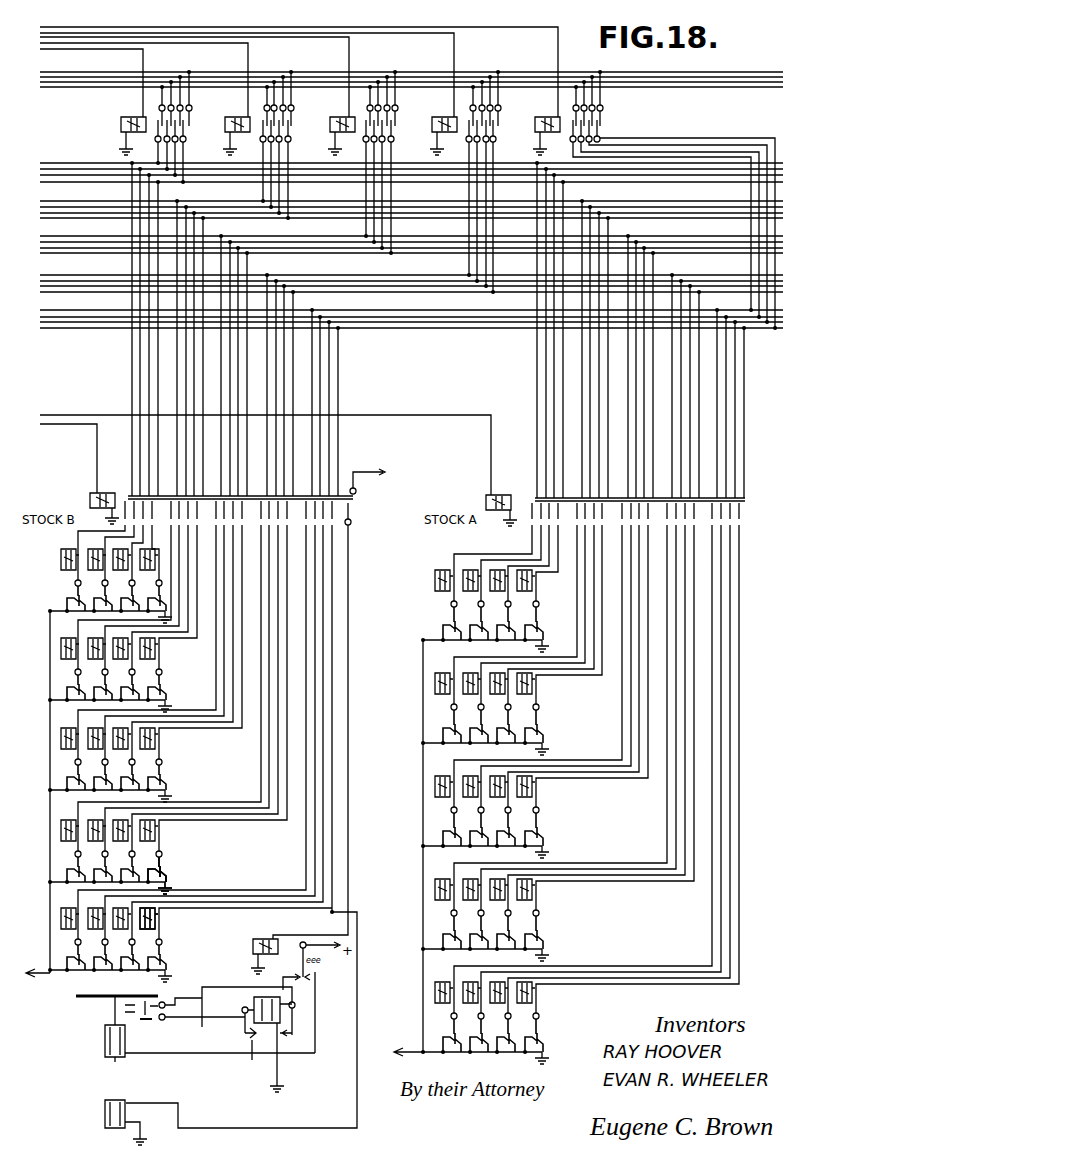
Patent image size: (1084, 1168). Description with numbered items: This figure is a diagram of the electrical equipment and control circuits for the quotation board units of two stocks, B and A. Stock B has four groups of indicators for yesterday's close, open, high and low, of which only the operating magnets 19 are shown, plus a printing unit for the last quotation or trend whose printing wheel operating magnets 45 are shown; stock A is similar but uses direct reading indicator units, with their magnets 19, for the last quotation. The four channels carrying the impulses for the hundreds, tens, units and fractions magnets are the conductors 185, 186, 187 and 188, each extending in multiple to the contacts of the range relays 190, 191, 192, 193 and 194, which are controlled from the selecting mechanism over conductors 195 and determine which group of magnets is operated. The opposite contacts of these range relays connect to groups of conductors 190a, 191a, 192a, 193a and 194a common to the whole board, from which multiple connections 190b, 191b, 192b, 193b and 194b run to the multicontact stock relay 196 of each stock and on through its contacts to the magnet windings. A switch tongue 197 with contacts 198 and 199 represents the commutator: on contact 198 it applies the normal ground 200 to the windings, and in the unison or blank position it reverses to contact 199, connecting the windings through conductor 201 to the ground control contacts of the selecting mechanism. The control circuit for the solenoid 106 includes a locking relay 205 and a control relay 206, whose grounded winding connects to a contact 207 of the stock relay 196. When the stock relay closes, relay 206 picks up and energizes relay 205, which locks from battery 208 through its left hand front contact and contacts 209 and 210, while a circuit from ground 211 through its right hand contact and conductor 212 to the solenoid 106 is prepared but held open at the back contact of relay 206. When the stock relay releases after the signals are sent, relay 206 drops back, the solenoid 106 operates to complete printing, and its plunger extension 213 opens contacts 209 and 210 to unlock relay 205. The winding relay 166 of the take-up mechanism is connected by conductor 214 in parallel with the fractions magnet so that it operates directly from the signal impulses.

The conductors 195 is at (70, 38).
The conductor 185 is at (56, 88).
The conductor 186 is at (68, 83).
The conductor 187 is at (88, 78).
The conductor 188 is at (107, 73).
The range relay 190 is at (136, 117).
The range relay 191 is at (240, 117).
The range relay 192 is at (340, 117).
The range relay 193 is at (444, 117).
The range relay 194 is at (547, 117).
The group of conductors 190a is at (58, 168).
The group of conductors 191a is at (70, 206).
The group of conductors 192a is at (72, 241).
The group of conductors 193a is at (74, 280).
The group of conductors 194a is at (74, 316).
The multiple connections 190b is at (142, 335).
The multiple connections 191b is at (188, 337).
The multiple connections 192b is at (233, 348).
The multiple connections 193b is at (282, 346).
The multiple connections 194b is at (325, 365).
The multicontact stock relay 196 is at (127, 494).
The contact 207 is at (356, 496).
The operating magnets 19 is at (535, 990).
The printing wheel operating magnets 45 is at (156, 916).
The switch tongue 197 is at (162, 870).
The contact 198 is at (166, 874).
The contact 199 is at (158, 868).
The normal ground 200 is at (170, 888).
The conductor 201 is at (44, 984).
The control relay 206 is at (265, 939).
The contact 210 is at (156, 1004).
The conductor 212 is at (220, 987).
The extension 213 is at (115, 1010).
The contact 209 is at (152, 1021).
The conductor 214 is at (357, 1006).
The battery 208 is at (250, 1045).
The locking relay 205 is at (272, 1025).
The ground 211 is at (280, 1086).
The solenoid 106 is at (105, 1040).
The winding relay 166 is at (105, 1113).